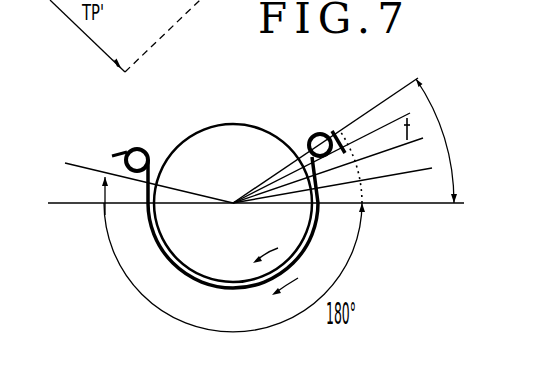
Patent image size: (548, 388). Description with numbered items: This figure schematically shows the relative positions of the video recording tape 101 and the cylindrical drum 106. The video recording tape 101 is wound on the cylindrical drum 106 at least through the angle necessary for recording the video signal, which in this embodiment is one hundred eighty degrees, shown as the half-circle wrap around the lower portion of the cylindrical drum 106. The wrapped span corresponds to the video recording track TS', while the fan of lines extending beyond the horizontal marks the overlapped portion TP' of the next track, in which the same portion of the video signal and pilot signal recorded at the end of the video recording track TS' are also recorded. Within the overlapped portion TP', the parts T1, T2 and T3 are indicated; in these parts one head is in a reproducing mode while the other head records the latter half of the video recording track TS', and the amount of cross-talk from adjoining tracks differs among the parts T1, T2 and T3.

The video recording tape 101 is at (120, 150).
The cylindrical drum 106 is at (265, 123).
The part T1 is at (417, 189).
The part T2 is at (410, 158).
The part T3 is at (380, 115).
The overlapped portion TP' is at (455, 141).
The video recording track TS' is at (238, 352).